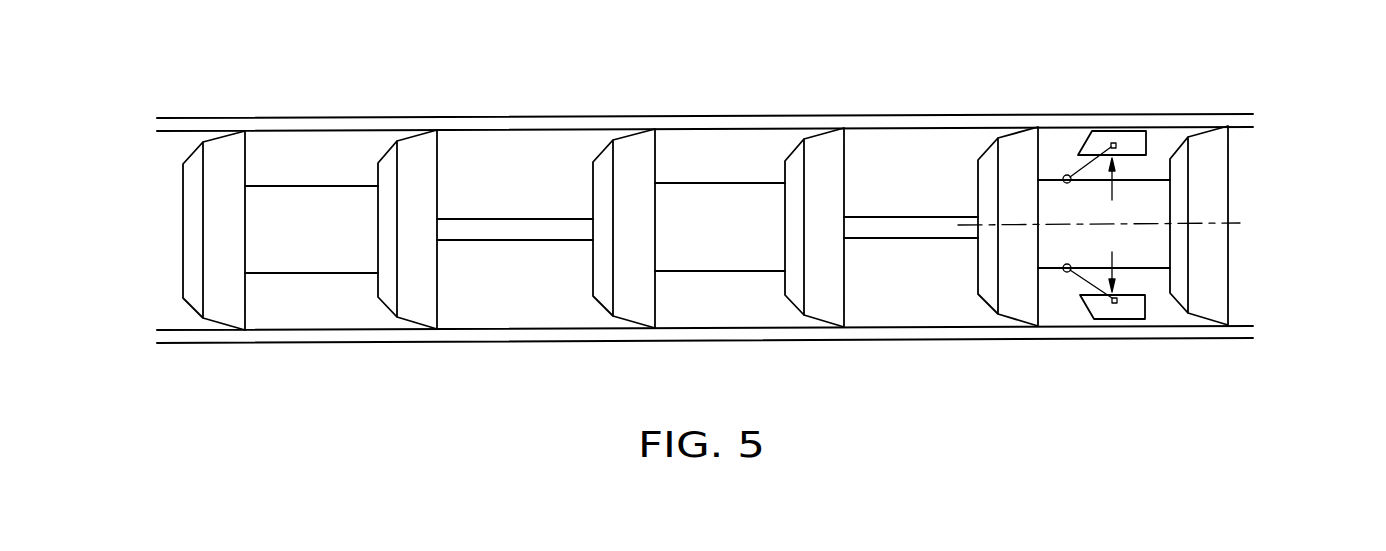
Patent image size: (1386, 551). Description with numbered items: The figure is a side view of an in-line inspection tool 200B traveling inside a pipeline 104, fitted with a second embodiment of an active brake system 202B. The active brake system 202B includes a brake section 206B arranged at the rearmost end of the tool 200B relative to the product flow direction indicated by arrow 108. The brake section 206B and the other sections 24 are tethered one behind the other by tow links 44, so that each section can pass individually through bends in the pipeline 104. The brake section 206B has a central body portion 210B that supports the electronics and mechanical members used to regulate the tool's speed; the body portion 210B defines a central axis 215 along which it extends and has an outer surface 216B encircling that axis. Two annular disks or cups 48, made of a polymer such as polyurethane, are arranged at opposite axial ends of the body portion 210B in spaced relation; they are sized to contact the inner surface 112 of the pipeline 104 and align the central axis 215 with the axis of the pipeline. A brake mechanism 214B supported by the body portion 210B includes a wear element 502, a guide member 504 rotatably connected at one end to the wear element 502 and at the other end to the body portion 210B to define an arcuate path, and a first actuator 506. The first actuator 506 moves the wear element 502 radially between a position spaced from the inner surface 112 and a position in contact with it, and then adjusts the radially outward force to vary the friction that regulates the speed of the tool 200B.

The sections 24 is at (331, 148).
The tow links 44 is at (513, 215).
The annular disks or cups 48 is at (192, 153).
The pipeline 104 is at (932, 340).
The arrow 108 is at (1275, 243).
The inner surface 112 is at (486, 135).
The ILI tool 200B is at (112, 140).
The active brake system 202B is at (1268, 302).
The brake section 206B is at (1242, 179).
The central body portion 210B is at (1047, 172).
The brake mechanism 214B is at (1065, 305).
The central axis 215 is at (1245, 223).
The outer surface 216B is at (1066, 208).
The wear element 502 is at (1088, 132).
The guide member 504 is at (1078, 155).
The first actuator 506 is at (1115, 186).